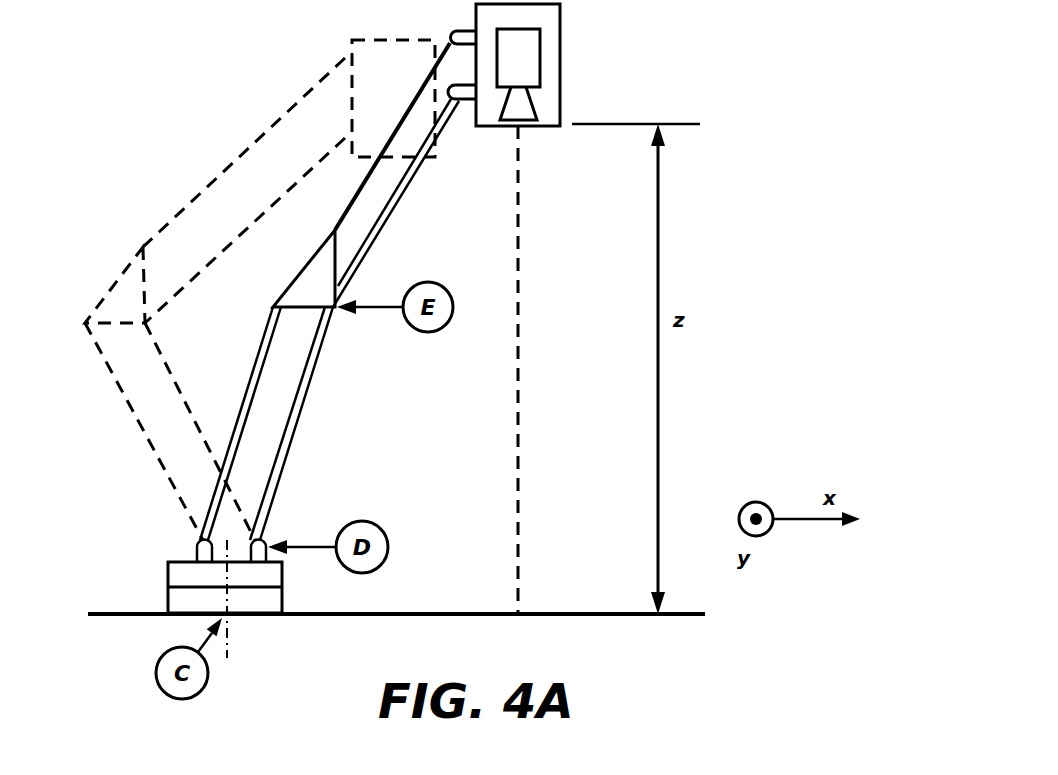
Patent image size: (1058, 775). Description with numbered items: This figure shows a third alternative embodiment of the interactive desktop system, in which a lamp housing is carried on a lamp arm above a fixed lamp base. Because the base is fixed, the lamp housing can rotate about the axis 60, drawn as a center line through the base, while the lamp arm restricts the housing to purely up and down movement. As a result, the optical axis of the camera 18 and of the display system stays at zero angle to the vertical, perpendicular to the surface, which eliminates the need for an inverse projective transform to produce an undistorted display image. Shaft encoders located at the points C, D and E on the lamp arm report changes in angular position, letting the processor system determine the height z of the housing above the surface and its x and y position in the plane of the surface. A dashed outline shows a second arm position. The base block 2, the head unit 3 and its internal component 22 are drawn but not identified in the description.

The base / workpiece holder 2 is at (168, 587).
The sensor head housing 3 is at (562, 92).
The sensor / nozzle unit 22 is at (542, 58).
The axis 60 is at (228, 602).
The camera 18 is at (600, 612).